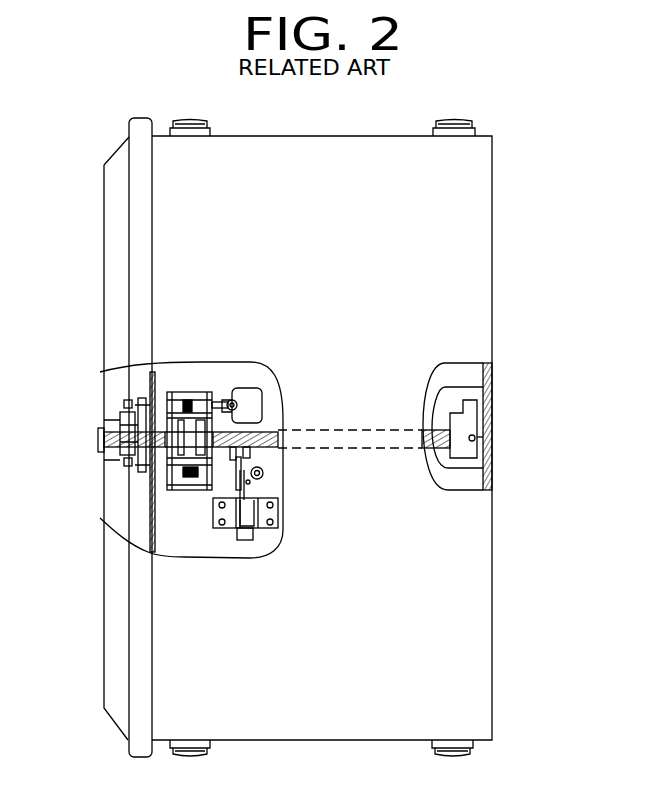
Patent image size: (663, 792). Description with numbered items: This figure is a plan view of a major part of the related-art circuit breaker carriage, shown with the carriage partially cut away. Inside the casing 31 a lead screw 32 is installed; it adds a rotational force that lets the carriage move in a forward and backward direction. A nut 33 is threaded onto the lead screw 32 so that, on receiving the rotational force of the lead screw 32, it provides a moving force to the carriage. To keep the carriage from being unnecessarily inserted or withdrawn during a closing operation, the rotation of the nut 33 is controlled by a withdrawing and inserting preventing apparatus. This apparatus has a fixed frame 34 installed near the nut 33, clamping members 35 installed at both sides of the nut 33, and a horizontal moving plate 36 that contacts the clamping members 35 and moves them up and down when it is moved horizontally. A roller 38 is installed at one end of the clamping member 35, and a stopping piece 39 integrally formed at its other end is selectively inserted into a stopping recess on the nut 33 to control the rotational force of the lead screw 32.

The casing 31 is at (483, 268).
The lead screw 32 is at (492, 468).
The nut 33 is at (132, 461).
The fixed frame 34 is at (170, 395).
The clamping member 35 is at (200, 400).
The horizontal moving plate 36 is at (250, 393).
The roller 38 is at (228, 400).
The stopping piece 39 is at (132, 408).